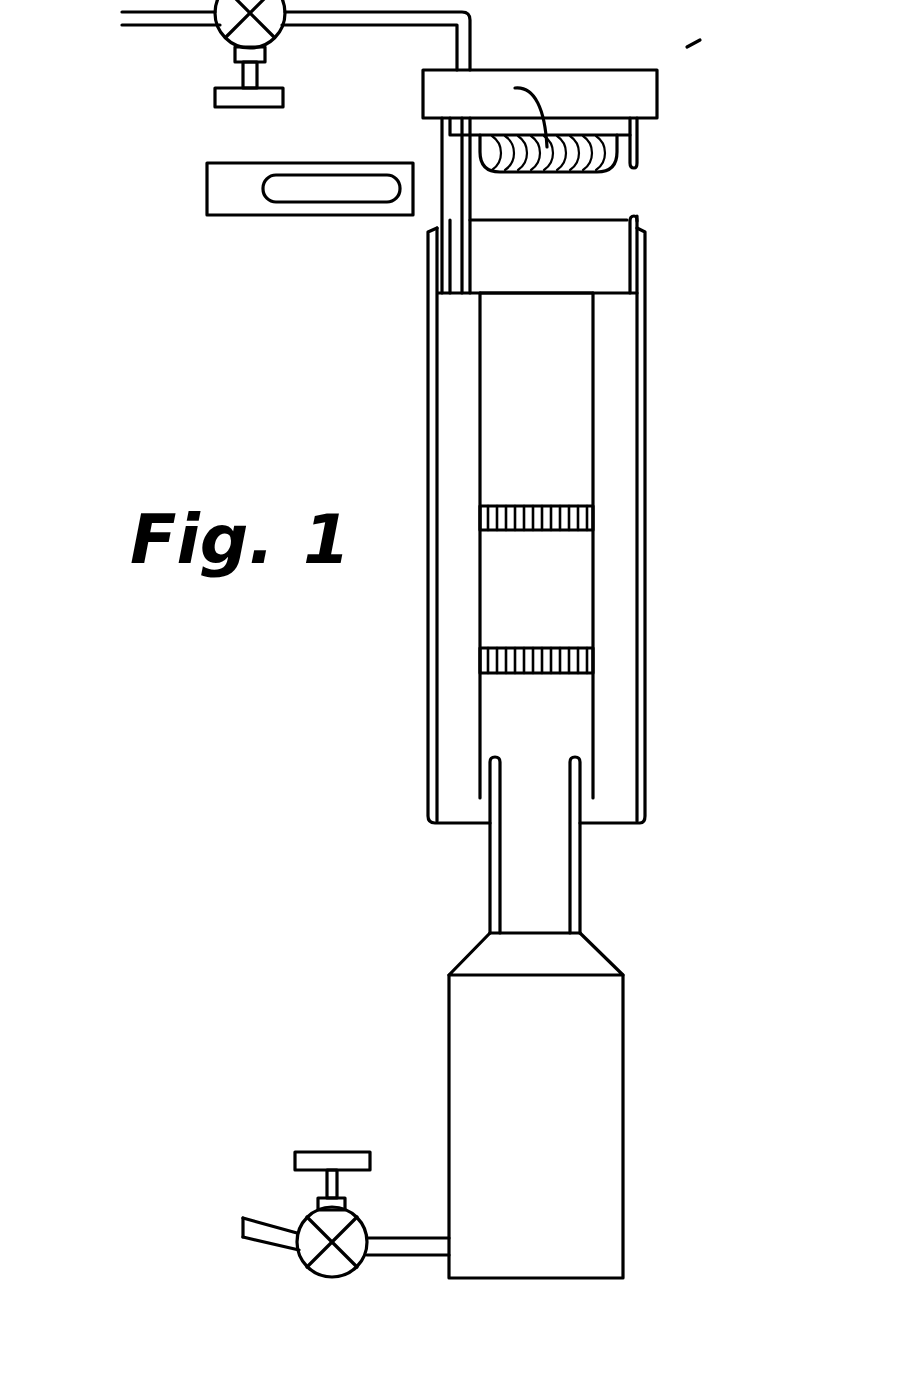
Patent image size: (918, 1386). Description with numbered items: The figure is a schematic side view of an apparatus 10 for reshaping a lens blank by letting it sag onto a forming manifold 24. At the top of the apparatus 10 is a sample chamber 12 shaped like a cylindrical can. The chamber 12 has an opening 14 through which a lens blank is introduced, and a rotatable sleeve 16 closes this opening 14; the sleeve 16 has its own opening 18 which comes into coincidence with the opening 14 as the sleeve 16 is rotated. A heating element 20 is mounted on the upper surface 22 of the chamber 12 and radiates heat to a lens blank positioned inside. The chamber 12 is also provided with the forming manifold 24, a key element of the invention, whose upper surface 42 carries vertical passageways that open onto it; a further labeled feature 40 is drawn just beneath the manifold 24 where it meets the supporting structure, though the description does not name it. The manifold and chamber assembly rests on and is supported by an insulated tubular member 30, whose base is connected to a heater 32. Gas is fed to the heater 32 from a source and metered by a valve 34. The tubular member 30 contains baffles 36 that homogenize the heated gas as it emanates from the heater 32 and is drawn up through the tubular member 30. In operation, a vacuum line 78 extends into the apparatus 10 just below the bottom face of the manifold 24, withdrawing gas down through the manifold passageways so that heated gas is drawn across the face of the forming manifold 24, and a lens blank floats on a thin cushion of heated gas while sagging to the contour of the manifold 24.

The apparatus 10 is at (687, 47).
The sample chamber 12 is at (522, 215).
The opening 14 is at (633, 167).
The rotatable sleeve 16 is at (235, 197).
The opening 18 is at (327, 187).
The heating element 20 is at (607, 153).
The upper surface 22 is at (505, 110).
The forming manifold 24 is at (517, 275).
The insulated tubular member 30 is at (613, 382).
The heater 32 is at (498, 1148).
The valve 34 is at (330, 1262).
The baffles 36 is at (542, 505).
The passage 40 is at (545, 297).
The upper surface 42 is at (615, 221).
The vacuum line 78 is at (472, 40).